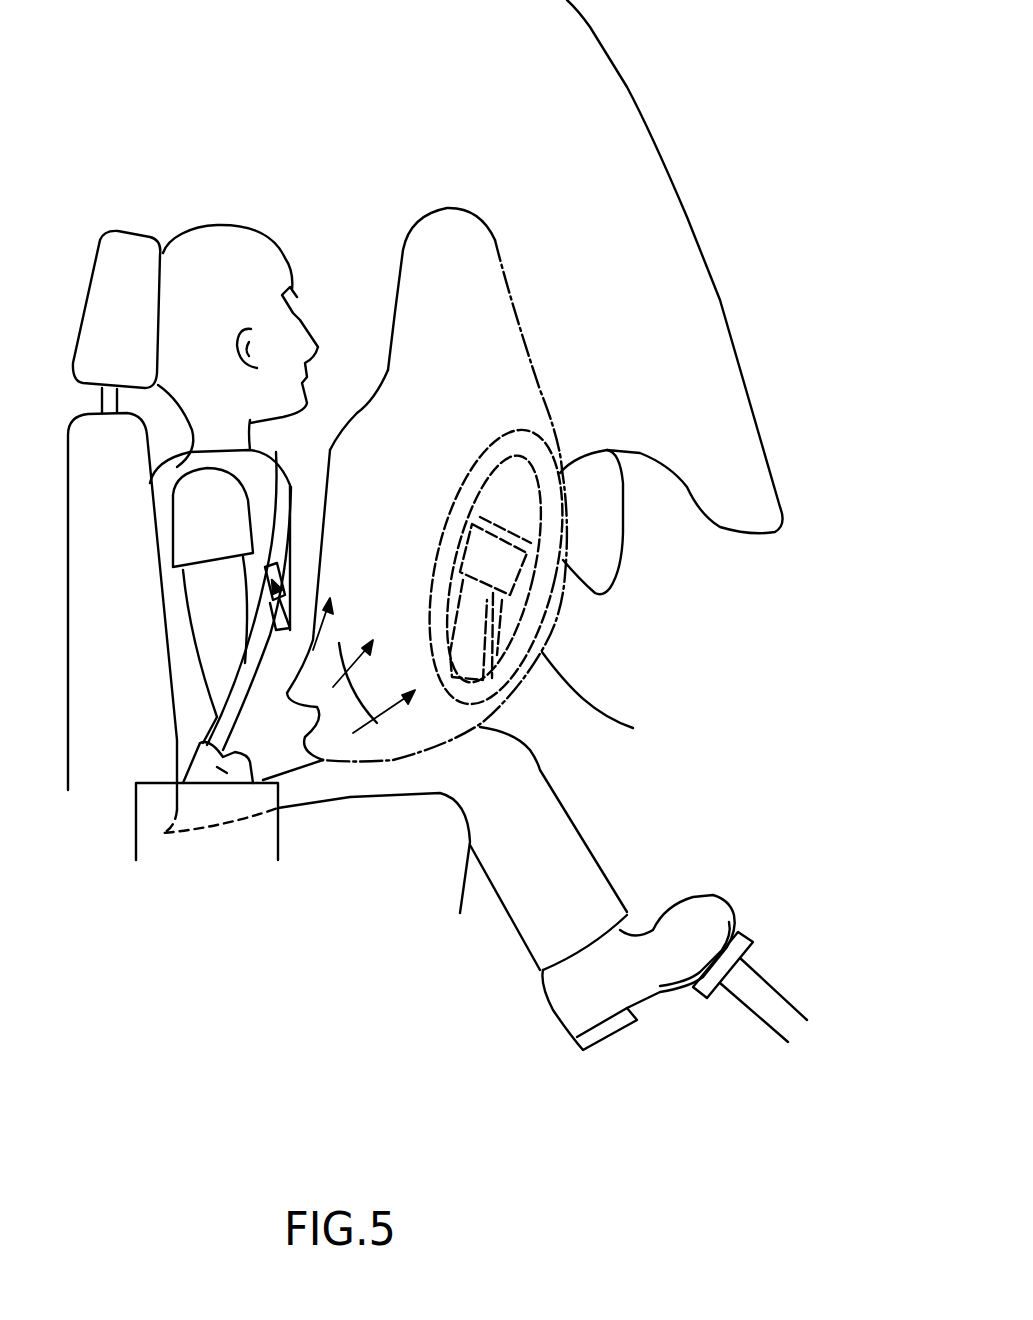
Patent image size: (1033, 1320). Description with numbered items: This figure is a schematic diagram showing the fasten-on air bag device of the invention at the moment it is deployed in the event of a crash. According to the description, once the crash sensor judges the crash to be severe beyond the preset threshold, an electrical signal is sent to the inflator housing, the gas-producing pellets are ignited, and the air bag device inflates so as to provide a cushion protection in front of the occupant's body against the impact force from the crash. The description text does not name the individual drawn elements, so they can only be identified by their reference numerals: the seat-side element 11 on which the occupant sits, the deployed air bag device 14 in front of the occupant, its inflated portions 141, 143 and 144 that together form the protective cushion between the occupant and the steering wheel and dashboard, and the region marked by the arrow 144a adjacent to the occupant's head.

The seat 11 is at (153, 807).
The airbag 14 is at (466, 458).
The first airbag portion 141 is at (360, 420).
The head protecting portion 143 is at (463, 231).
The second airbag portion 144 is at (533, 403).
The gas flow passage 144a is at (349, 258).